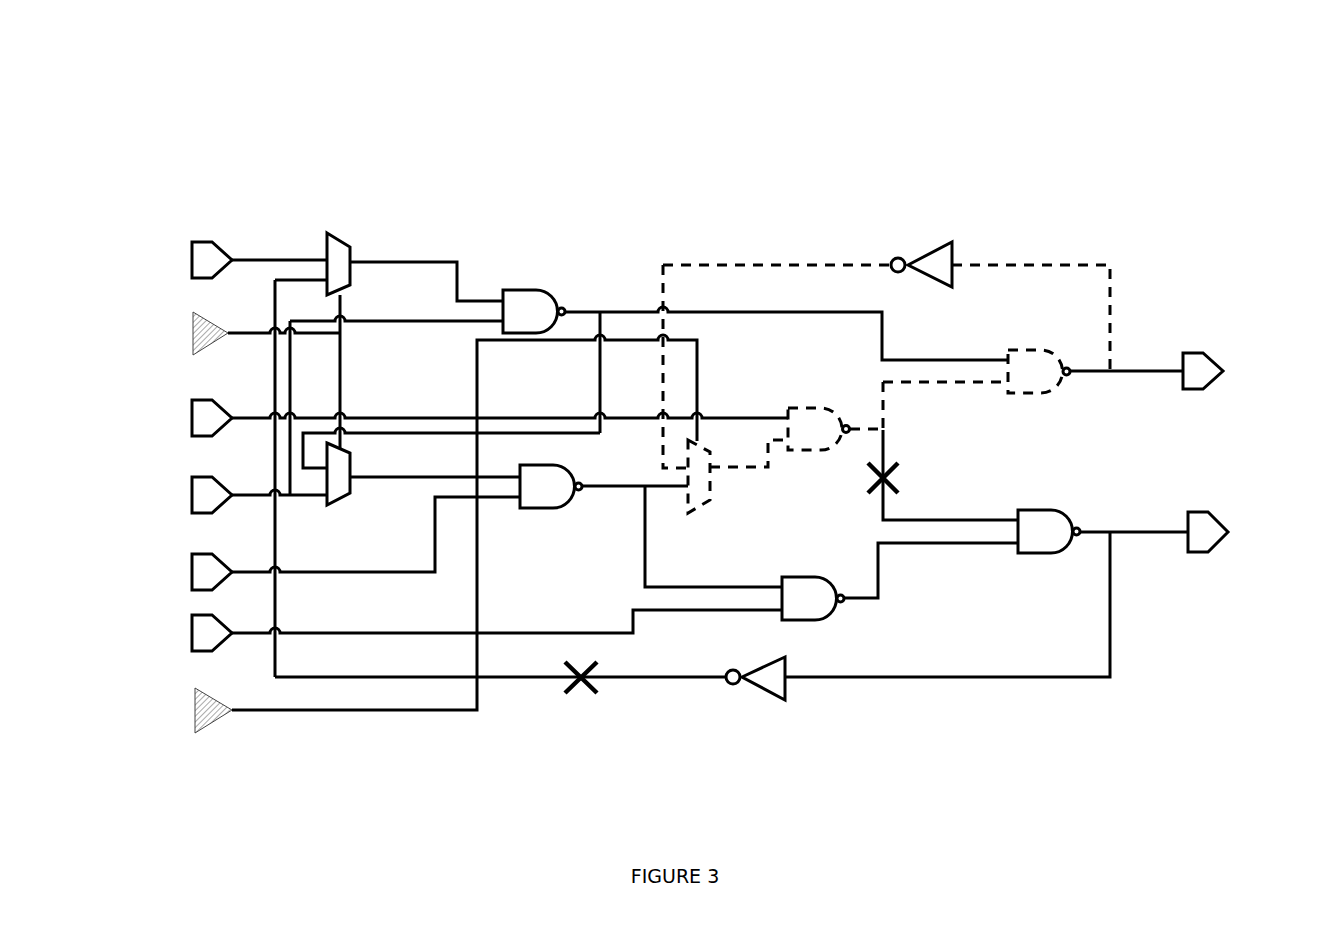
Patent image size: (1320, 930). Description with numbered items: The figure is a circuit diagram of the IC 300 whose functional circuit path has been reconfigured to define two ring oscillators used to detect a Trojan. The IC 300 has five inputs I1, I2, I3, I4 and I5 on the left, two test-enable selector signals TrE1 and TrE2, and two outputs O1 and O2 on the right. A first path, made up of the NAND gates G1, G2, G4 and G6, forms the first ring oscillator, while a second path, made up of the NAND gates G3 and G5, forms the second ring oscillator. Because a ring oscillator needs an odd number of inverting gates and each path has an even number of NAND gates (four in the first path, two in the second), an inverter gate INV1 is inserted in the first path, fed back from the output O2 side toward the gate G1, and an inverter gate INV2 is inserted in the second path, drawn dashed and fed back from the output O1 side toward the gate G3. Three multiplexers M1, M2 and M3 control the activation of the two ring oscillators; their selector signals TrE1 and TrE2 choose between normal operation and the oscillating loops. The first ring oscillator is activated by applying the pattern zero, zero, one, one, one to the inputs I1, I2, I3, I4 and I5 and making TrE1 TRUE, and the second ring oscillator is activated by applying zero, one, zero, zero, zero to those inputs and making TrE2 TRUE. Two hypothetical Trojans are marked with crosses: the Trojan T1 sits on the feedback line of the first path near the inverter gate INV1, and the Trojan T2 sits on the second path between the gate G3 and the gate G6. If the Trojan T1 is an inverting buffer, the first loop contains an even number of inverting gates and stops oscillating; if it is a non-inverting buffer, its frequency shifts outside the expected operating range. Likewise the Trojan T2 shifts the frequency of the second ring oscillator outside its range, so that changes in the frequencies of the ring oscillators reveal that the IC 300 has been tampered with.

The IC 300 is at (815, 135).
The input I1 is at (196, 260).
The input I2 is at (196, 418).
The input I3 is at (196, 495).
The input I4 is at (196, 572).
The input I5 is at (196, 633).
The selector signal TrE1 is at (183, 333).
The selector signal TrE2 is at (183, 710).
The output O1 is at (1223, 371).
The output O2 is at (1228, 532).
The multiplexer M1 is at (331, 249).
The multiplexer M2 is at (334, 490).
The multiplexer M3 is at (720, 488).
The gate G1 is at (534, 328).
The gate G2 is at (551, 508).
The gate G3 is at (819, 444).
The gate G4 is at (813, 614).
The gate G5 is at (1039, 387).
The gate G6 is at (1049, 550).
The inverter gate INV1 is at (755, 694).
The inverter gate INV2 is at (928, 245).
The Trojan T1 is at (582, 693).
The Trojan T2 is at (905, 478).